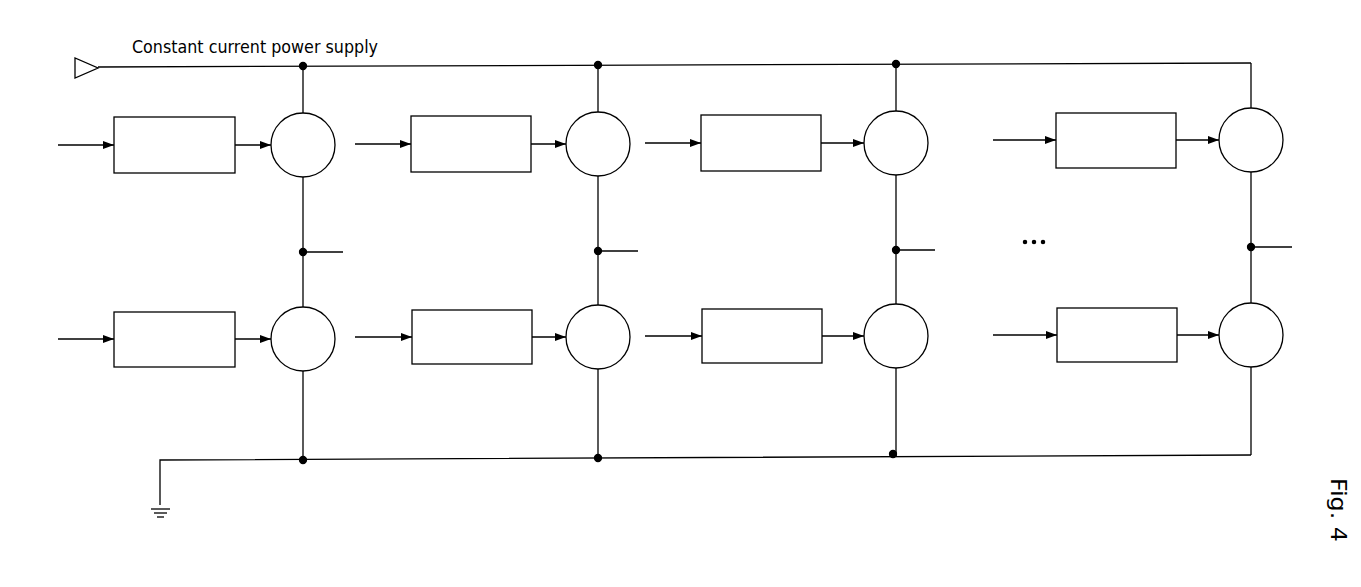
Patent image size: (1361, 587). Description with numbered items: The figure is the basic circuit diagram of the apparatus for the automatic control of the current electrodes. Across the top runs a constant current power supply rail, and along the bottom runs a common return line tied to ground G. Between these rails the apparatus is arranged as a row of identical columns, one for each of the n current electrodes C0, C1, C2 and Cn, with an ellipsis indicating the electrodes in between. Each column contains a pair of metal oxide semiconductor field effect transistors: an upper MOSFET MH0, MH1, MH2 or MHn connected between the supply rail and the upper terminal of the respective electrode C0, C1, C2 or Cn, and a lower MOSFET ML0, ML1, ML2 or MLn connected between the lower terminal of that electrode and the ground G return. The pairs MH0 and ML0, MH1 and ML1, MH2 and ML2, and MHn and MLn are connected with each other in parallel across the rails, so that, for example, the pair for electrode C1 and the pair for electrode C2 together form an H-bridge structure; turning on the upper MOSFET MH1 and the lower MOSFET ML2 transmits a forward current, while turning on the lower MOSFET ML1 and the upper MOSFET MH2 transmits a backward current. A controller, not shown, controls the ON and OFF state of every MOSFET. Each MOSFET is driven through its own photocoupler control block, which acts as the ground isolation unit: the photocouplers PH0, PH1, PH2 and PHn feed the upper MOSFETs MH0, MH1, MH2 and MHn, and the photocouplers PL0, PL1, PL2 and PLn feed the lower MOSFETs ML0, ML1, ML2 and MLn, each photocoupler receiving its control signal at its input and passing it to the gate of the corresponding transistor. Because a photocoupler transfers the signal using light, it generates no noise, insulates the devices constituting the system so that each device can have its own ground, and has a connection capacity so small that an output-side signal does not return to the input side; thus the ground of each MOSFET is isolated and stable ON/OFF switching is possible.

The photocoupler PH0 is at (175, 173).
The photocoupler PH1 is at (471, 172).
The photocoupler PH2 is at (760, 171).
The photocoupler PHn is at (1117, 168).
The photocoupler PL0 is at (175, 367).
The photocoupler PL1 is at (473, 364).
The photocoupler PL2 is at (760, 363).
The photocoupler PLn is at (1117, 362).
The upper MOSFET MH0 is at (288, 172).
The upper MOSFET MH1 is at (586, 171).
The upper MOSFET MH2 is at (878, 170).
The upper MOSFET MHn is at (1237, 164).
The lower MOSFET ML0 is at (288, 366).
The lower MOSFET ML1 is at (587, 364).
The lower MOSFET ML2 is at (878, 363).
The lower MOSFET MLn is at (1237, 359).
The current electrode C0 is at (323, 243).
The current electrode C1 is at (618, 242).
The current electrode C2 is at (915, 241).
The current electrode Cn is at (1270, 238).
The ground G is at (172, 513).